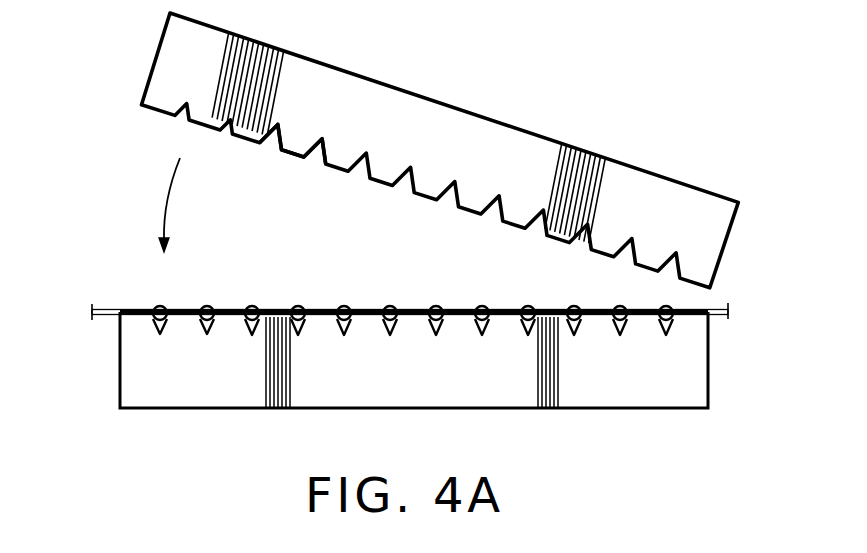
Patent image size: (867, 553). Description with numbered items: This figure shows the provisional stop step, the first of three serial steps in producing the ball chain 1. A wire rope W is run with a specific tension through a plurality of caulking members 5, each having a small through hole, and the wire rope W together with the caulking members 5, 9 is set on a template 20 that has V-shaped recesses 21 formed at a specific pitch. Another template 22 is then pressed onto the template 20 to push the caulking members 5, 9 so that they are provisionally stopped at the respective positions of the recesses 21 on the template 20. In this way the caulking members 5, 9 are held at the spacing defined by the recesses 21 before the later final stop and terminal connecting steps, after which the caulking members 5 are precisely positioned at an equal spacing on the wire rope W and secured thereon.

The template 22 is at (408, 92).
The recesses 21 is at (275, 140).
The template 20 is at (132, 367).
The wire rope W is at (712, 309).
The caulking member 9 is at (206, 310).
The caulking members 5 is at (251, 306).
The ball chain 1 is at (422, 306).